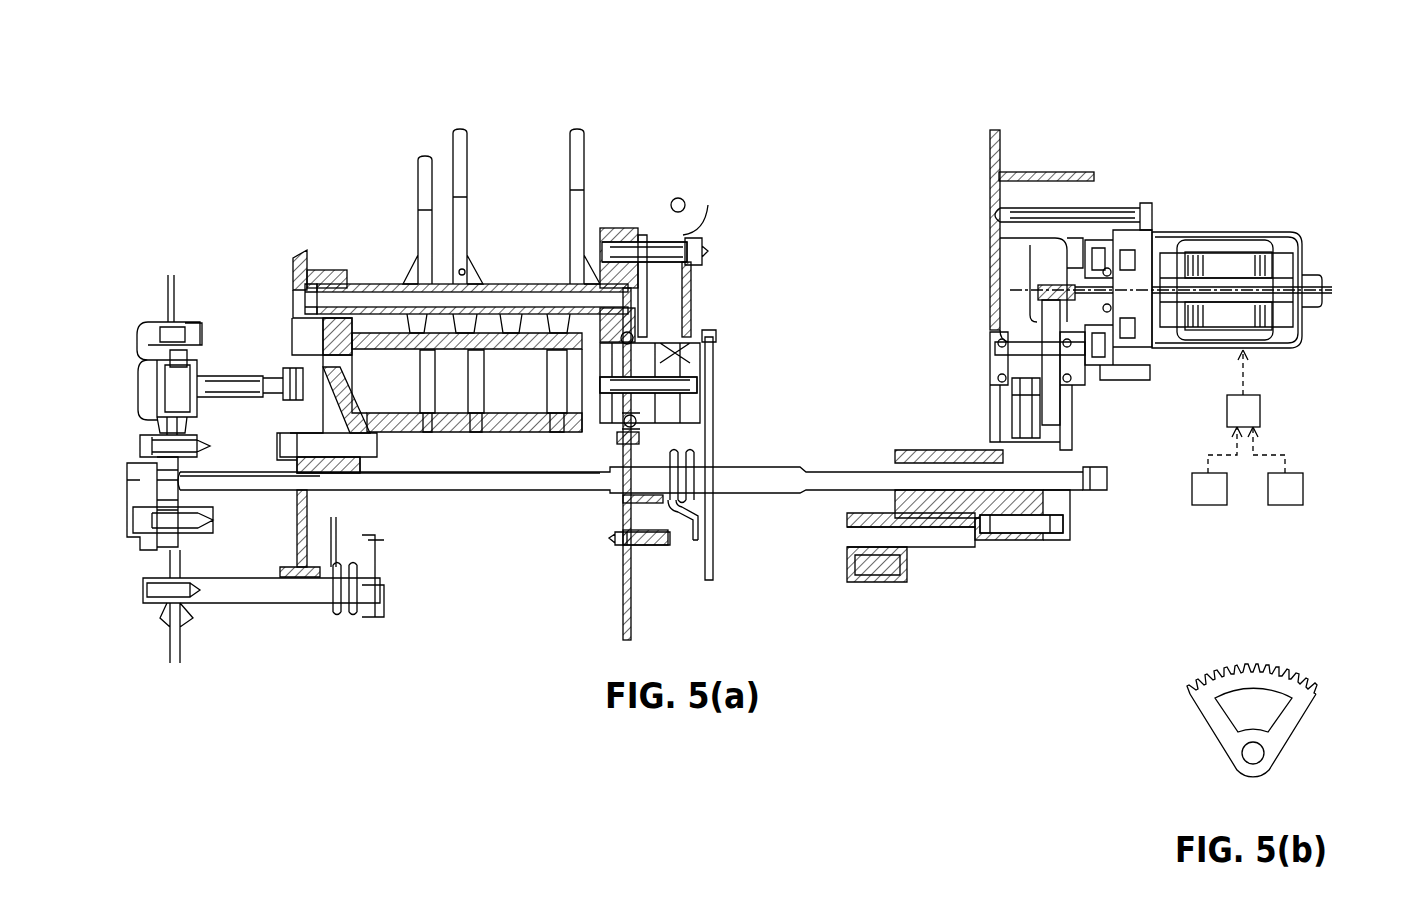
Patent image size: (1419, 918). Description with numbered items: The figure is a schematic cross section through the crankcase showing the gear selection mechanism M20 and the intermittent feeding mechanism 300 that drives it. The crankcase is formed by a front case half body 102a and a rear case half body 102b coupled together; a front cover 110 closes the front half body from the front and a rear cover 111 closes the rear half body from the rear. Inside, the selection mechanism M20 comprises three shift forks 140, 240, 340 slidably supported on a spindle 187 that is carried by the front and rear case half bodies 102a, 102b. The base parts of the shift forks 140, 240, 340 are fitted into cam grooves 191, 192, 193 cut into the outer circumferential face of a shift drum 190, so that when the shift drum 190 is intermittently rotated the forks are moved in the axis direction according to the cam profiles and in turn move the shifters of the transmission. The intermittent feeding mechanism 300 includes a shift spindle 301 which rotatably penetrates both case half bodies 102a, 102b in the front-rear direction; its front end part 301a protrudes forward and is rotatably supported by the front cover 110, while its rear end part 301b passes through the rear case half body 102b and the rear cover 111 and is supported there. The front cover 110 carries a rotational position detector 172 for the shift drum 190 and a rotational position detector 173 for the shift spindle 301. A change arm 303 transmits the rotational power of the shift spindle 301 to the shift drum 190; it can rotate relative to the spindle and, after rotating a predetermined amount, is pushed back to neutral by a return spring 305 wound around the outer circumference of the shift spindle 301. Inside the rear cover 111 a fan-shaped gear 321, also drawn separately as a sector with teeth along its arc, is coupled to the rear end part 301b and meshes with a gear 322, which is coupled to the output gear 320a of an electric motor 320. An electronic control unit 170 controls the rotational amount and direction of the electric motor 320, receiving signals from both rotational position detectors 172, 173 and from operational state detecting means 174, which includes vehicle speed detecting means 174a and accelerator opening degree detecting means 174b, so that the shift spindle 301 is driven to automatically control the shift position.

In FIG. 5A, the front cover 110 is at (165, 302).
In FIG. 5A, the front case half body 102a is at (298, 320).
In FIG. 5A, the rear case half body 102b is at (643, 318).
In FIG. 5A, the rotational position detector 172 is at (158, 385).
In FIG. 5A, the rotational position detector 173 is at (133, 484).
In FIG. 5A, the shift spindle 301 is at (483, 490).
In FIG. 5A, the front end part 301a is at (246, 473).
In FIG. 5A, the rear end part 301b is at (792, 468).
In FIG. 5A, the shift drum 190 is at (370, 350).
In FIG. 5A, the spindle 187 is at (366, 300).
In FIG. 5A, the shift fork 140 is at (420, 192).
In FIG. 5A, the shift fork 240 is at (455, 148).
In FIG. 5A, the shift fork 340 is at (575, 158).
In FIG. 5A, the cam groove 191 is at (420, 350).
In FIG. 5A, the cam groove 192 is at (476, 350).
In FIG. 5A, the cam groove 193 is at (570, 352).
In FIG. 5A, the change arm 303 is at (713, 420).
In FIG. 5A, the return spring 305 is at (700, 518).
In FIG. 5A, the intermittent feeding mechanism 300 is at (738, 346).
In FIG. 5A, the selection mechanism M20 is at (665, 130).
In FIG. 5A, the rear cover 111 is at (1068, 422).
In FIG. 5A, the gear 322 is at (1005, 330).
In FIG. 5A, the fan-shaped gear 321 is at (1010, 412).
In FIG. 5B, the fan-shaped gear 321 is at (1297, 712).
In FIG. 5A, the output gear 320a is at (1060, 290).
In FIG. 5A, the electric motor 320 is at (1220, 240).
In FIG. 5A, the electronic control unit 170 is at (1260, 410).
In FIG. 5A, the vehicle speed detecting means 174a is at (1285, 505).
In FIG. 5A, the accelerator opening degree detecting means 174b is at (1208, 500).
In FIG. 5A, the operational state detecting means 174 is at (1330, 540).